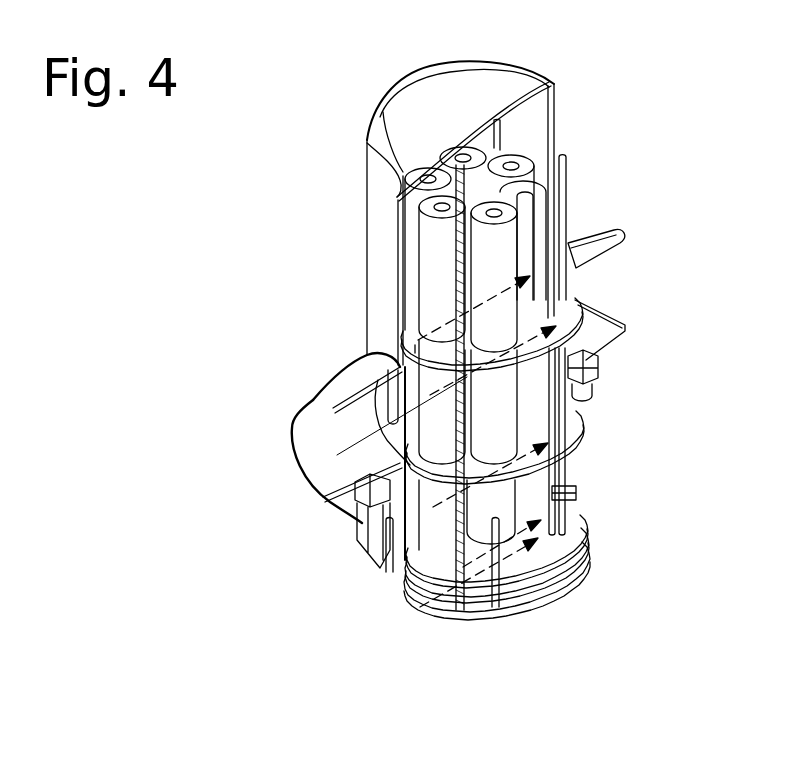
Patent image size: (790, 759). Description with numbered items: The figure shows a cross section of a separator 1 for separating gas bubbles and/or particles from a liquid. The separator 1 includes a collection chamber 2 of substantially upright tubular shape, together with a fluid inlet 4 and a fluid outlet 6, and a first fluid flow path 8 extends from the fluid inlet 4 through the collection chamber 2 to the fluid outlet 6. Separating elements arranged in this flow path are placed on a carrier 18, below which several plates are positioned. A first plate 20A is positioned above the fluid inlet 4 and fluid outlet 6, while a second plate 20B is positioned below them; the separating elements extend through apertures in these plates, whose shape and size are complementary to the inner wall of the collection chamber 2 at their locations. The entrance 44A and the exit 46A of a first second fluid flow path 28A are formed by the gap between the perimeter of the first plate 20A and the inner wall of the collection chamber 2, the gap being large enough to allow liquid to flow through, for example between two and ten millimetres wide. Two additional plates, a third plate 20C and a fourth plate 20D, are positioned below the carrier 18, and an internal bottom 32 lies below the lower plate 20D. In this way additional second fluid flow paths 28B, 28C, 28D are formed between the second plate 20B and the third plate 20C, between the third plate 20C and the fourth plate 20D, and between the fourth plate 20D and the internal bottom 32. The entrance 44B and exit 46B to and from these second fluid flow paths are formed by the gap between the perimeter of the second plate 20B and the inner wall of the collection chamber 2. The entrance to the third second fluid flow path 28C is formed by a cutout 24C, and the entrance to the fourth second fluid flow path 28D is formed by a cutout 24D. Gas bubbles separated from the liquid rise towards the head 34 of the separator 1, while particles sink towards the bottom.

The separator 1 is at (600, 100).
The collection chamber 2 is at (367, 192).
The fluid inlet 4 is at (290, 440).
The fluid outlet 6 is at (611, 318).
The first fluid flow path 8 is at (337, 455).
The carrier 18 is at (572, 490).
The first plate 20A is at (583, 300).
The second plate 20B is at (583, 428).
The third plate 20C is at (577, 537).
The fourth plate 20D is at (575, 572).
The cutout 24C is at (478, 577).
The cutout 24D is at (440, 595).
The first second fluid flow path 28A is at (450, 272).
The second fluid flow path 28B is at (433, 532).
The third second fluid flow path 28C is at (405, 580).
The fourth second fluid flow path 28D is at (432, 598).
The internal bottom 32 is at (560, 601).
The head 34 is at (470, 133).
The entrance 44A is at (415, 353).
The entrance 44B is at (400, 505).
The exit 46A is at (572, 303).
The exit 46B is at (574, 399).